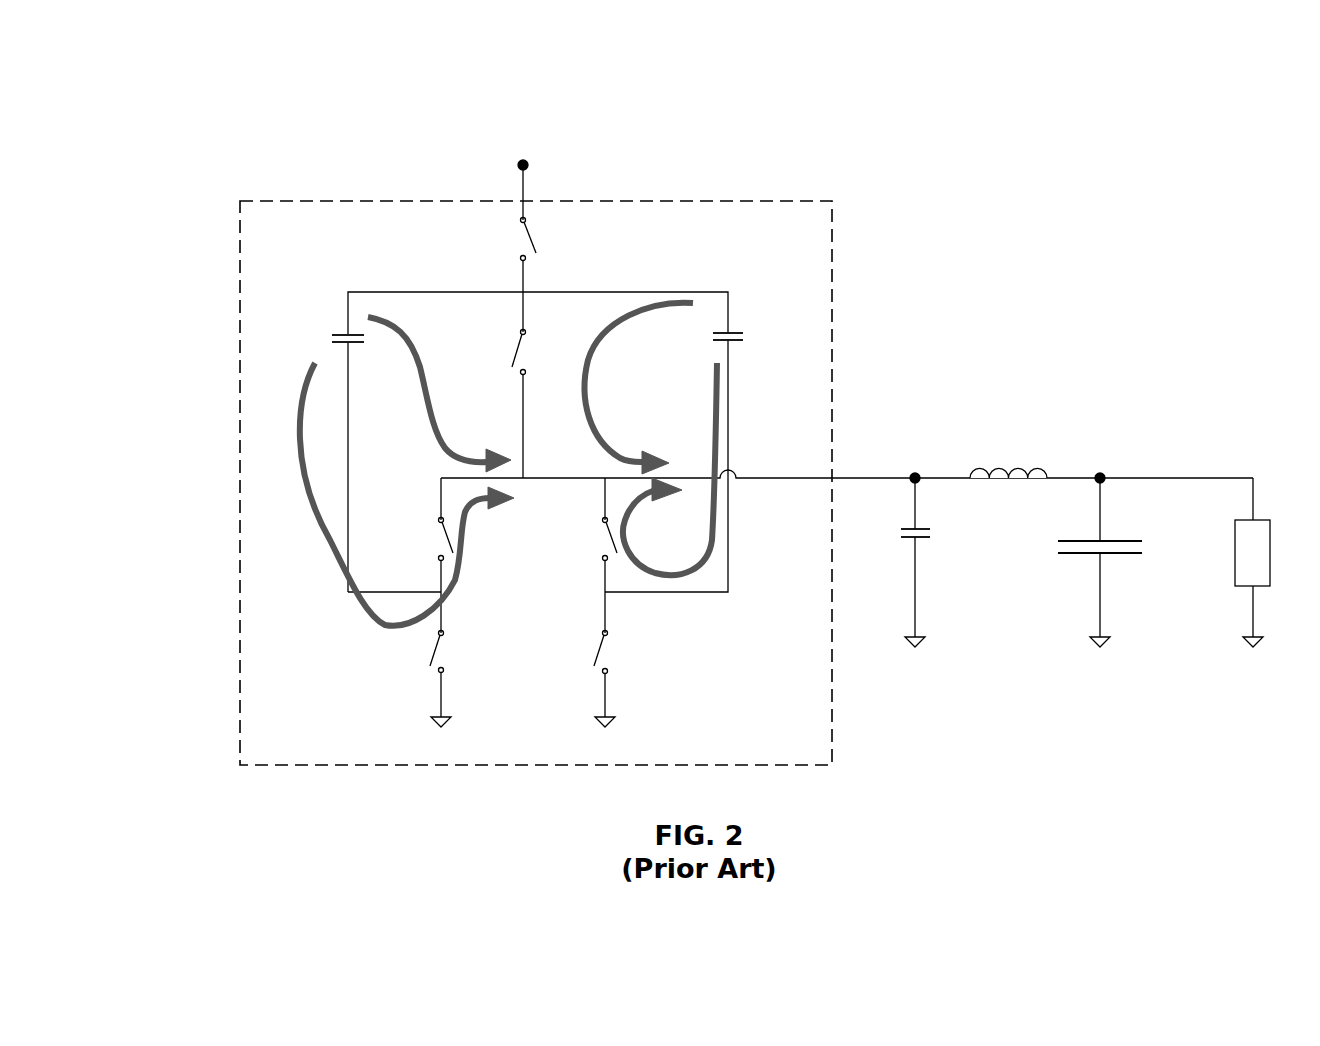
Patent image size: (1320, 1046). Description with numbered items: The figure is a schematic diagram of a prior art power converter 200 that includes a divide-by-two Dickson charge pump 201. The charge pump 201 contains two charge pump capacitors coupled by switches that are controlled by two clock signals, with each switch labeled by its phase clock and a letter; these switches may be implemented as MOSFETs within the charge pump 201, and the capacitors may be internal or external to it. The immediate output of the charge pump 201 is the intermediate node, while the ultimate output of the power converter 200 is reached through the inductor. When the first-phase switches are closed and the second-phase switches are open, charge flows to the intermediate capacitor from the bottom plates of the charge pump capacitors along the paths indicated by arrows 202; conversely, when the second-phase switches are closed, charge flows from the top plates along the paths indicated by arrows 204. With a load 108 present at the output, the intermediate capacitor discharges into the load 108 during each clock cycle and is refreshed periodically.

The power converter 200 is at (1172, 57).
The divide-by-two Dickson charge pump 201 is at (240, 216).
The arrows 202 is at (371, 618).
The arrows 204 is at (440, 442).
The load 108 is at (1233, 585).